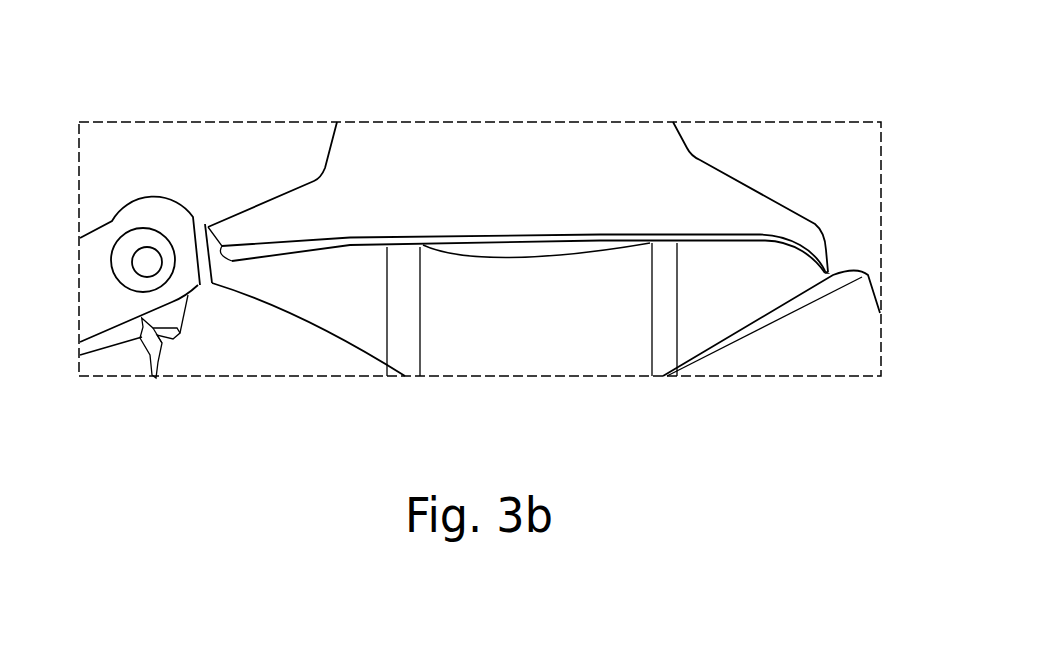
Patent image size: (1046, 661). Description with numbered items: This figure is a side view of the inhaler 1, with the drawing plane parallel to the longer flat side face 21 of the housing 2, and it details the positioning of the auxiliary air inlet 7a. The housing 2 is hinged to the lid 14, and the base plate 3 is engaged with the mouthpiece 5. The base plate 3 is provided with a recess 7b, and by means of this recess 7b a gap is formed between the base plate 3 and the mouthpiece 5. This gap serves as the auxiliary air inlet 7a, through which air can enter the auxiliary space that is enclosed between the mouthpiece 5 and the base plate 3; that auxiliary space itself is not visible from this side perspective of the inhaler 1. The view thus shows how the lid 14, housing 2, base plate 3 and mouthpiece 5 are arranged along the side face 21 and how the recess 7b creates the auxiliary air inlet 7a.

The inhaler 1 is at (762, 162).
The housing 2 is at (850, 340).
The base plate 3 is at (800, 267).
The mouthpiece 5 is at (552, 167).
The auxiliary air inlet 7a is at (512, 247).
The recess 7b is at (563, 317).
The lid 14 is at (98, 363).
The longer flat side face 21 is at (328, 340).